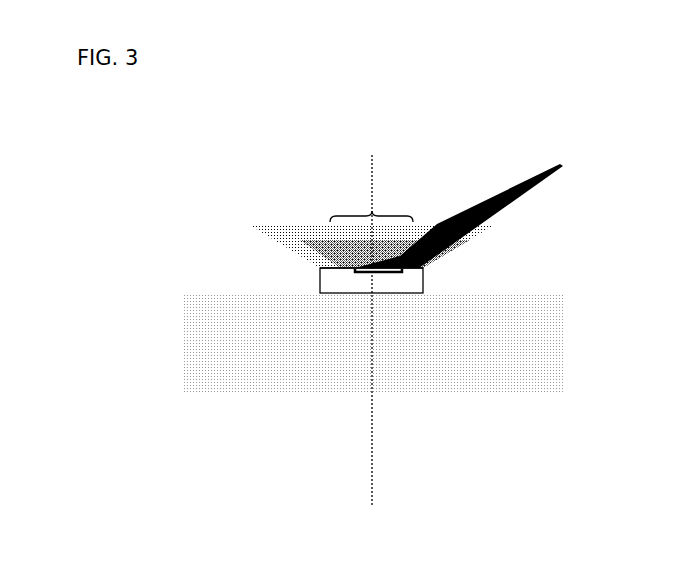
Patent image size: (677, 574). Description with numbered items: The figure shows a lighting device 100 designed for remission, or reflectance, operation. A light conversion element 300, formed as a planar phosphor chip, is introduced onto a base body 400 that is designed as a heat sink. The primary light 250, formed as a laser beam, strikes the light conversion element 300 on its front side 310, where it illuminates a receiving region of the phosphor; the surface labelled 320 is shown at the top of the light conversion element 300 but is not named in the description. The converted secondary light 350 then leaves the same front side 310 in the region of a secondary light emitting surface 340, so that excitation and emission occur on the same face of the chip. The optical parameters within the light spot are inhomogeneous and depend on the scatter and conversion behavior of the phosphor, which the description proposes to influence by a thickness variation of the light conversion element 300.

The lighting device 100 is at (242, 470).
The primary light 250 is at (520, 188).
The light conversion element 300 is at (424, 284).
The front side 310 is at (378, 281).
The sample surface 320 is at (422, 268).
The secondary light emitting surface 340 is at (371, 210).
The secondary light 350 is at (302, 230).
The base body 400 is at (556, 348).